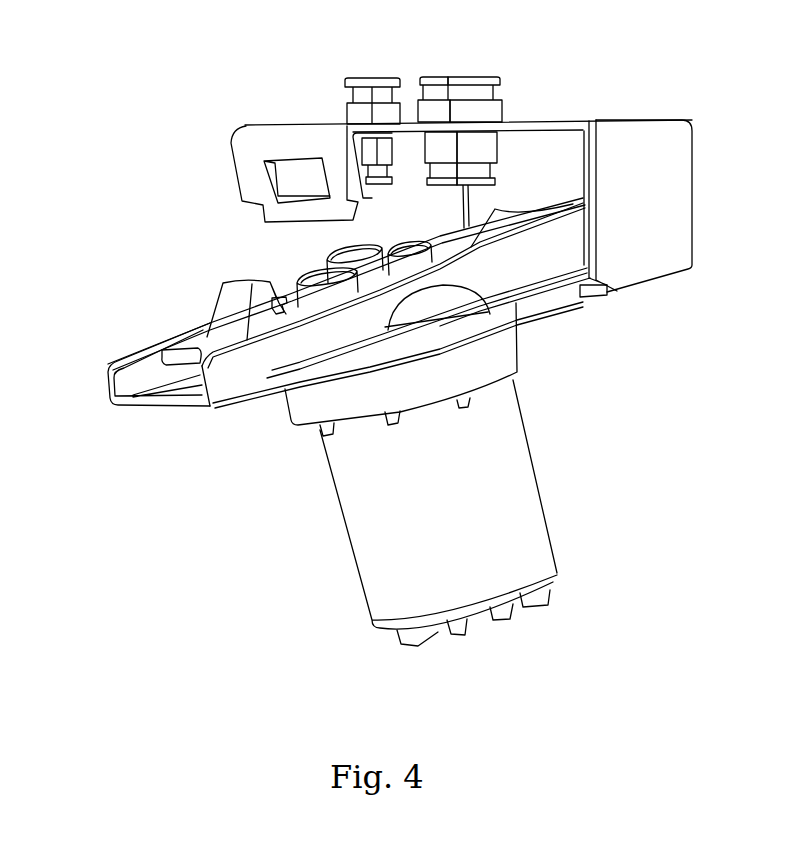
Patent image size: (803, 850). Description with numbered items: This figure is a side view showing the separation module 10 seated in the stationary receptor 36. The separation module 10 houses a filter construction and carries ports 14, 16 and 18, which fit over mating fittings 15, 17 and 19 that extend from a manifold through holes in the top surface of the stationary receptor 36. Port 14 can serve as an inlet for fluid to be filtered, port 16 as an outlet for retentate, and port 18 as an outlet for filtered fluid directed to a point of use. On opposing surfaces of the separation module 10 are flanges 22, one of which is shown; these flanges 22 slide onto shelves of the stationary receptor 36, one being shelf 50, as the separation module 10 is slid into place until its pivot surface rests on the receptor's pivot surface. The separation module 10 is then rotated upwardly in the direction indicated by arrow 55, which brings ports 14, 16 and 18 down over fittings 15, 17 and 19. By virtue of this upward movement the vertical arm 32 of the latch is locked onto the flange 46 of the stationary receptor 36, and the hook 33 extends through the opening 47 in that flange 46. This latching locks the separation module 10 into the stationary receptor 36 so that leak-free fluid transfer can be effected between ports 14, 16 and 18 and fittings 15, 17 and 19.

The separation module 10 is at (565, 483).
The port 14 is at (403, 237).
The fitting 15 is at (487, 148).
The port 16 is at (315, 273).
The fitting 17 is at (378, 147).
The port 18 is at (368, 240).
The fitting 19 is at (432, 152).
The flange 22 is at (535, 295).
The vertical arm 32 is at (237, 297).
The hook 33 is at (282, 295).
The stationary receptor 36 is at (623, 165).
The flange 46 is at (258, 192).
The opening 47 is at (300, 175).
The shelf 50 is at (625, 293).
The arrow 55 is at (62, 362).